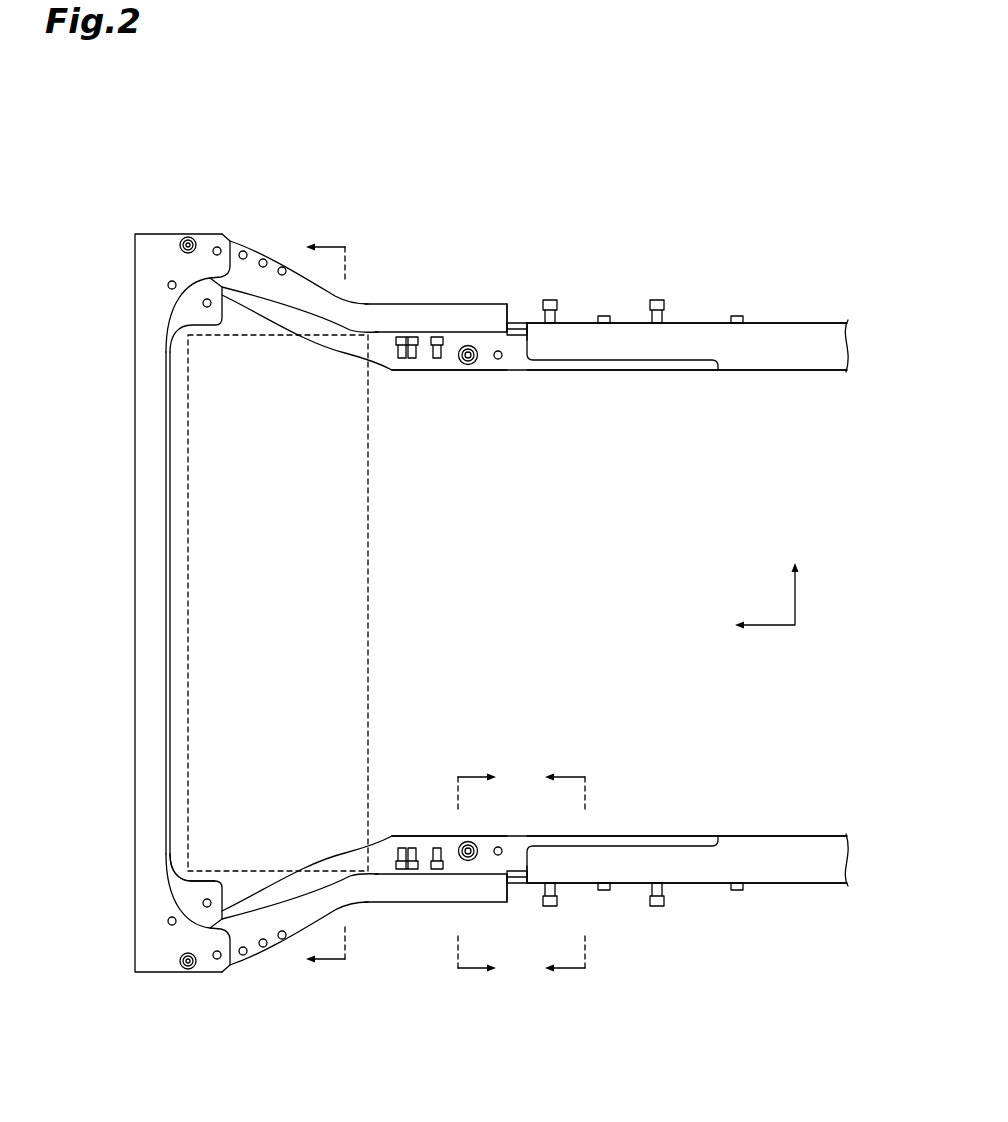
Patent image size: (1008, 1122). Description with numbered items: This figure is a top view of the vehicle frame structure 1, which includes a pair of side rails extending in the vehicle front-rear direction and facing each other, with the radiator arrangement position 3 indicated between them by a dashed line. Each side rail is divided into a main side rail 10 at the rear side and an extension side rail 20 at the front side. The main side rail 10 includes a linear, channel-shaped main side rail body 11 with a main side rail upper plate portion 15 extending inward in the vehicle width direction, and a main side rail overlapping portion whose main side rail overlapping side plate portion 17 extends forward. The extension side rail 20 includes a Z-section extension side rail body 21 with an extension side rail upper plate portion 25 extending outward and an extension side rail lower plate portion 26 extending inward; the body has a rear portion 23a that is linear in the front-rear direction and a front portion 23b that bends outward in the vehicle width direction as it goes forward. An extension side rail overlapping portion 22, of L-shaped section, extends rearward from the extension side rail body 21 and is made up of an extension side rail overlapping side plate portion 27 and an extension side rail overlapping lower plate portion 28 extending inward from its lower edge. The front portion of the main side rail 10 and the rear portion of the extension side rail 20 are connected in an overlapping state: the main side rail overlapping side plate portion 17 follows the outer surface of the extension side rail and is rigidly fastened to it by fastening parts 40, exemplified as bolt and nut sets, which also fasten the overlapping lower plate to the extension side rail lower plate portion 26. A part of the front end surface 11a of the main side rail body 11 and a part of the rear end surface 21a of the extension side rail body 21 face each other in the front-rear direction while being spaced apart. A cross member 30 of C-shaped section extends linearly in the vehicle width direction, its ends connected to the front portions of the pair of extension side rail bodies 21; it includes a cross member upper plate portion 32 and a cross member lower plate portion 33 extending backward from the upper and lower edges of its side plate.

The vehicle frame structure 1 is at (148, 141).
The radiator arrangement position 3 is at (372, 578).
The main side rail 10 is at (800, 323).
The main side rail body 11 is at (768, 373).
The front end surface 11a is at (526, 340).
The main side rail upper plate portion 15 is at (814, 348).
The main side rail overlapping side plate portion 17 is at (519, 322).
The extension side rail 20 is at (360, 300).
The extension side rail body 21 is at (288, 263).
The rear end surface 21a is at (508, 320).
The extension side rail overlapping portion 22 is at (678, 373).
The rear portion 23a is at (470, 303).
The front portion 23b is at (235, 234).
The extension side rail upper plate portion 25 is at (330, 309).
The extension side rail lower plate portion 26 is at (267, 310).
The extension side rail overlapping side plate portion 27 is at (516, 340).
The extension side rail overlapping lower plate portion 28 is at (618, 362).
The cross member 30 is at (134, 547).
The cross member upper plate portion 32 is at (150, 627).
The cross member lower plate portion 33 is at (190, 893).
The fastening part 40 is at (437, 358).